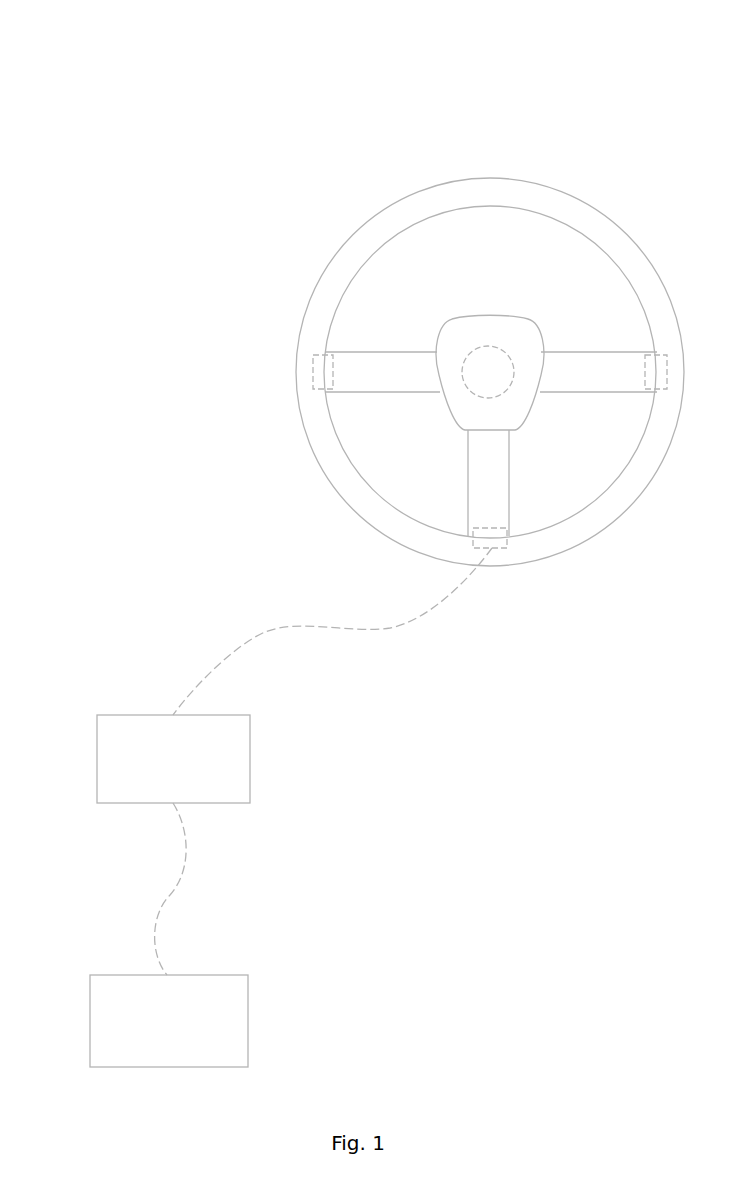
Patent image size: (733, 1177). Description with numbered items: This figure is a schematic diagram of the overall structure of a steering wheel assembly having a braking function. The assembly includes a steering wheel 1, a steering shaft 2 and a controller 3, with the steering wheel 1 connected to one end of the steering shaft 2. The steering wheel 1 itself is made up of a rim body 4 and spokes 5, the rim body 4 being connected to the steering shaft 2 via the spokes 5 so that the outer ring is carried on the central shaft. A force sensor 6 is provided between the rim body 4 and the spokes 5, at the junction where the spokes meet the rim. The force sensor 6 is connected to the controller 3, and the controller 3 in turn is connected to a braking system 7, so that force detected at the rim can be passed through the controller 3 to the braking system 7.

The steering wheel 1 is at (437, 283).
The steering shaft 2 is at (485, 367).
The controller 3 is at (155, 738).
The rim body 4 is at (389, 220).
The spokes 5 is at (384, 363).
The force sensor 6 is at (313, 382).
The braking system 7 is at (148, 998).